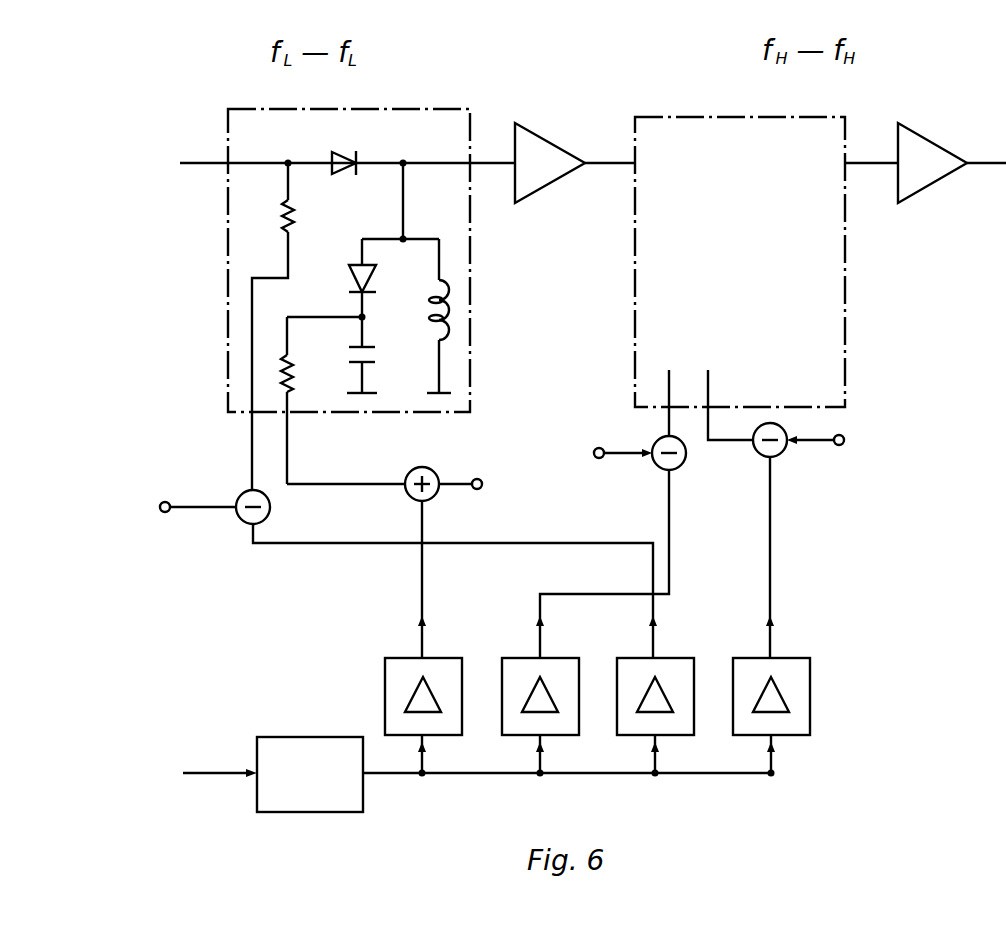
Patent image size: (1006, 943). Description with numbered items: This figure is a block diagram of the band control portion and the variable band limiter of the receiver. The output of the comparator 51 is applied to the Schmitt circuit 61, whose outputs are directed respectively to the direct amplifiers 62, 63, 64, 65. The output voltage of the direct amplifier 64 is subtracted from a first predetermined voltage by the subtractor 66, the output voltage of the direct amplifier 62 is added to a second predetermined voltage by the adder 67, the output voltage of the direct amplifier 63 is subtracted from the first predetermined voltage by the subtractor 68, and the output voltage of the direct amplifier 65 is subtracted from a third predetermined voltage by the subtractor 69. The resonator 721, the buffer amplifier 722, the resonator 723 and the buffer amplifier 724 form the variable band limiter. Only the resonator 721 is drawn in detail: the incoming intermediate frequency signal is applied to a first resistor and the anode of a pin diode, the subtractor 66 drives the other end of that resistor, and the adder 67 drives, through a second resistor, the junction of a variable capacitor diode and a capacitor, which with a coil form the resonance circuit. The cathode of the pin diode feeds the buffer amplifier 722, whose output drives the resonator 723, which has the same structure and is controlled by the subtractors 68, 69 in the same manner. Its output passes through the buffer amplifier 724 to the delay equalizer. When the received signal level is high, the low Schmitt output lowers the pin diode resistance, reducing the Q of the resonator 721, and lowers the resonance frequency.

The resonator 721 is at (245, 130).
The buffer amplifier 722 is at (535, 144).
The resonator 723 is at (717, 127).
The buffer amplifier 724 is at (930, 148).
The subtractor 66 is at (246, 523).
The adder 67 is at (405, 490).
The subtractor 68 is at (682, 467).
The subtractor 69 is at (783, 455).
The direct amplifier 62 is at (385, 690).
The direct amplifier 63 is at (503, 724).
The direct amplifier 64 is at (620, 723).
The direct amplifier 65 is at (735, 718).
The Schmitt circuit 61 is at (313, 812).
The comparator 51 is at (159, 763).